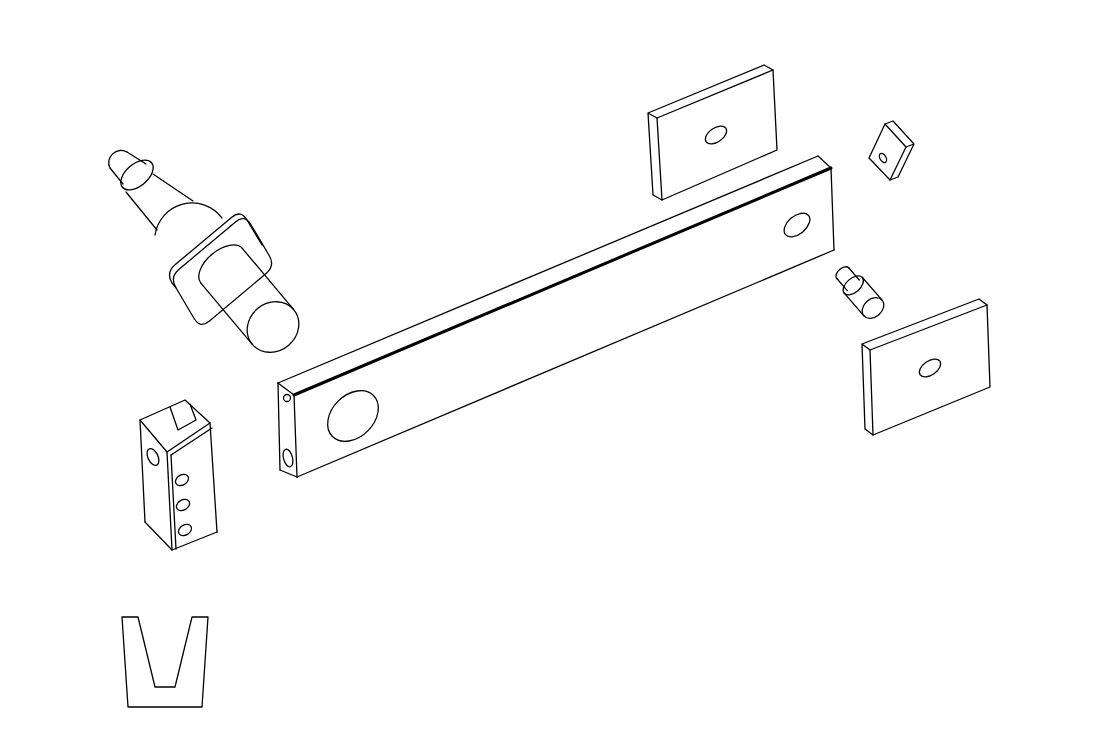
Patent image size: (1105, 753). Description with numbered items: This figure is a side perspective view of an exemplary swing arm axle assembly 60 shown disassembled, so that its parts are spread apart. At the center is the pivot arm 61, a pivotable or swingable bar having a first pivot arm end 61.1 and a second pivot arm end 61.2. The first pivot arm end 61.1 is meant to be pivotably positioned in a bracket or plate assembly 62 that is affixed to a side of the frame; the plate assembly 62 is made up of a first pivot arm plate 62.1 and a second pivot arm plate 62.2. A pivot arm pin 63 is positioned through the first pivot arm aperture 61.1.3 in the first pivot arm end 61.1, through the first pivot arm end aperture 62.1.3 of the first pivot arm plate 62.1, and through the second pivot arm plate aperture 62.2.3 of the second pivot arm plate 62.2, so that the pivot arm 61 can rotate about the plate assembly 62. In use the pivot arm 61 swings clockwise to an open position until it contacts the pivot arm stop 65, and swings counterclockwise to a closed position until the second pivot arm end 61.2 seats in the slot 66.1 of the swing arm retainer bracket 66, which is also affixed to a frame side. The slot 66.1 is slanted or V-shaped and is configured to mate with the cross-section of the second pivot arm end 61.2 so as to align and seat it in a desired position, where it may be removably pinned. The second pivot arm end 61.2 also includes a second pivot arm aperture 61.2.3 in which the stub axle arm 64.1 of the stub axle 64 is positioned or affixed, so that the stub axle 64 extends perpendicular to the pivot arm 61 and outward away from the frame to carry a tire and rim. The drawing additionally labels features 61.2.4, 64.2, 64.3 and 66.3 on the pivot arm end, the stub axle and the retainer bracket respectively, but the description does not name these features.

The swing arm axle assembly 60 is at (421, 130).
The pivot arm 61 is at (552, 333).
The first pivot arm end 61.1 is at (830, 149).
The first pivot arm aperture 61.1.3 is at (803, 228).
The second pivot arm end 61.2 is at (372, 478).
The second pivot arm aperture 61.2.3 is at (368, 367).
The hole at second end 61.2.4 is at (287, 463).
The plate assembly 62 is at (793, 250).
The first pivot arm plate 62.1 is at (673, 125).
The first pivot arm end aperture 62.1.3 is at (712, 140).
The second pivot arm plate 62.2 is at (908, 348).
The second pivot arm plate aperture 62.2.3 is at (935, 360).
The pivot arm pin 63 is at (860, 292).
The stub axle 64 is at (221, 176).
The stub axle arm 64.1 is at (238, 312).
The flange of plug 64.2 is at (172, 310).
The body of plug 64.3 is at (150, 200).
The pivot arm stop 65 is at (896, 127).
The swing arm retainer bracket 66 is at (137, 537).
The slot 66.1 is at (209, 414).
The hole of clamping block 66.3 is at (143, 432).